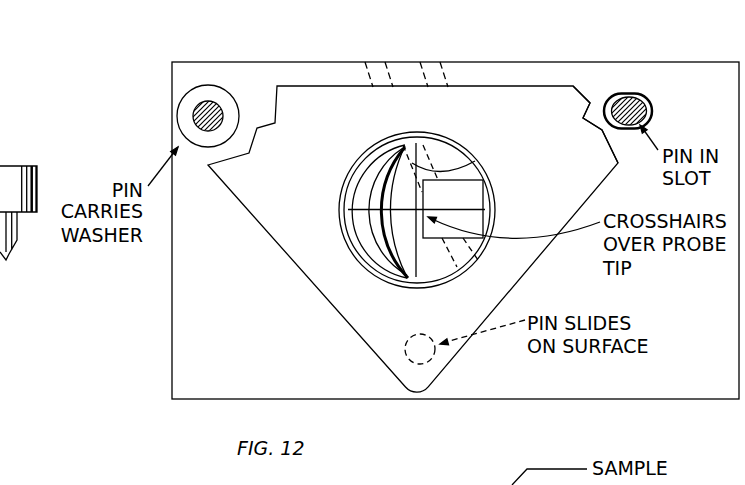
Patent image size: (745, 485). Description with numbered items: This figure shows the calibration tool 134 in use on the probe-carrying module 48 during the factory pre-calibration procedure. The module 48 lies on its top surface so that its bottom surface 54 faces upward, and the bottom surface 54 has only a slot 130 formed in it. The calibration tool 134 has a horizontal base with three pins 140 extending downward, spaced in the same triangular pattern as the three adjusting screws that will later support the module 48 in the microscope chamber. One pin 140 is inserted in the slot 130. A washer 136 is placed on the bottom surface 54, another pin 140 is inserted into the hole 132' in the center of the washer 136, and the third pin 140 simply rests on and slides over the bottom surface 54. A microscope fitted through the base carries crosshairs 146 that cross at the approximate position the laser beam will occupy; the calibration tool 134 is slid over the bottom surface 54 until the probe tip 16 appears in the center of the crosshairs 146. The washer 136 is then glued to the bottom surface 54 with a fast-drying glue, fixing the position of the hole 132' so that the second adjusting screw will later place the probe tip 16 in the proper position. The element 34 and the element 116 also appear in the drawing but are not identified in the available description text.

The microscope objective 34 is at (18, 174).
The pin hole 132' is at (150, 101).
The pin 140 is at (225, 114).
The washer 136 is at (229, 138).
The lens 146 is at (458, 162).
The slot 130 is at (652, 117).
The plate 54 is at (705, 313).
The probe tip 16 is at (417, 211).
The triangular plate 134 is at (352, 305).
The stage 48 is at (163, 357).
The sample holder 116 is at (402, 484).